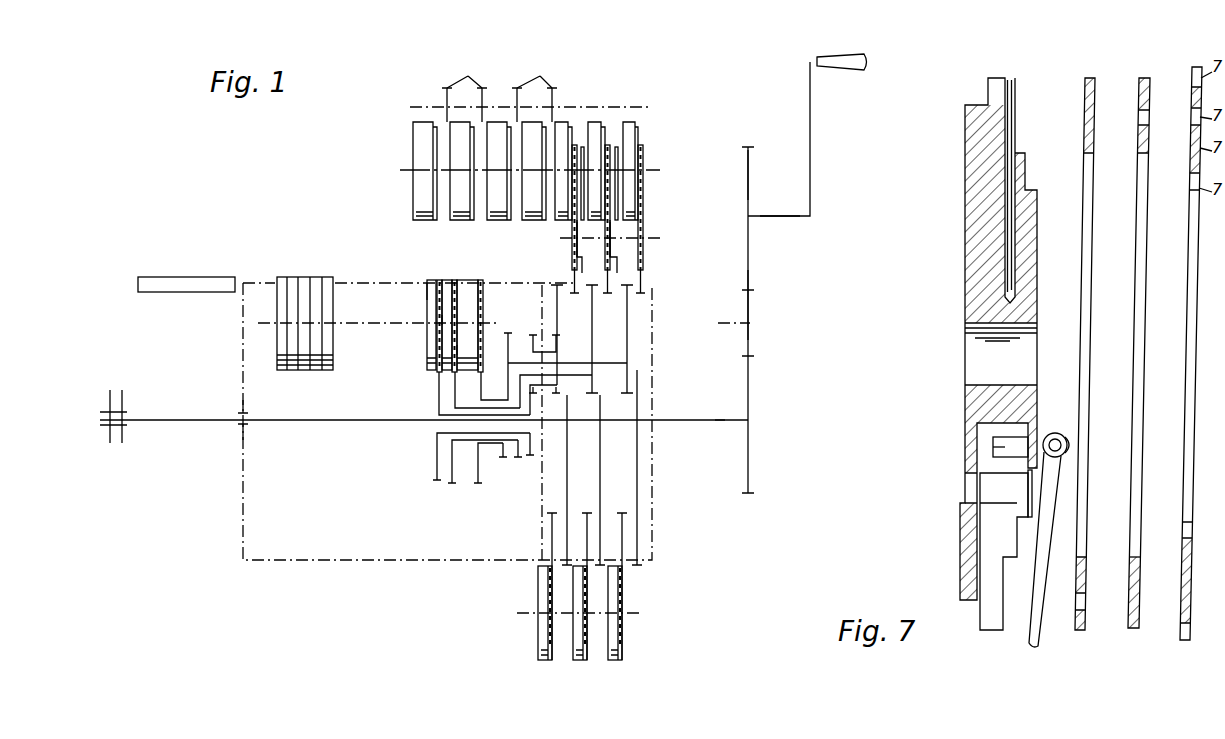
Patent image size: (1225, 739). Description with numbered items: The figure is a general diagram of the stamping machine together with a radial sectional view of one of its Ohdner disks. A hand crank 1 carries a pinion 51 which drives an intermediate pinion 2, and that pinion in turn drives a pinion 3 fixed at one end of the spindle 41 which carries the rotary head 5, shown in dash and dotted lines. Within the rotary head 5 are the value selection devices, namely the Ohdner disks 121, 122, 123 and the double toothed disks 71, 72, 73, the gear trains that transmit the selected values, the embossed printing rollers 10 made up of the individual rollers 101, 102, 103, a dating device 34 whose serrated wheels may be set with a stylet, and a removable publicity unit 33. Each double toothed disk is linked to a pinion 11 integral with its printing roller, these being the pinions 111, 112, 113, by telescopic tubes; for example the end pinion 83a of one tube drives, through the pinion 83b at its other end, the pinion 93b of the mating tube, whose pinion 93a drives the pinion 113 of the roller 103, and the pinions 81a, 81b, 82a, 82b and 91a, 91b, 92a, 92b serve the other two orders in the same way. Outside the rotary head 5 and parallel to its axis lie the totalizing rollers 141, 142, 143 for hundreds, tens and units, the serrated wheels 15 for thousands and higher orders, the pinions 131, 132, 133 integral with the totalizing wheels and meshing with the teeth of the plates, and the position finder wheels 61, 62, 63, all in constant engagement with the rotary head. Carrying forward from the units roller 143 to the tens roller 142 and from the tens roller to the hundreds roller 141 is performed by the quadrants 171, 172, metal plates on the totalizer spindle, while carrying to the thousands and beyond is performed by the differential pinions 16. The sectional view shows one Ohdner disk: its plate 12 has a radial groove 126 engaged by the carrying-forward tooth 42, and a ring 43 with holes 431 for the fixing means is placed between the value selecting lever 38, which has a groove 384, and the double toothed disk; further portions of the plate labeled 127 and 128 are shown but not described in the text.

In FIG. 1, the hand crank 1 is at (811, 160).
In FIG. 1, the pinion 11 is at (775, 218).
In FIG. 1, the pinion of the hand crank 51 is at (750, 180).
In FIG. 1, the intermediate pinion 2 is at (750, 313).
In FIG. 1, the pinion 3 is at (750, 410).
In FIG. 1, the spindle 41 is at (719, 422).
In FIG. 1, the carrying-forward tooth 42 is at (255, 422).
In FIG. 7, the carrying-forward tooth 42 is at (1040, 566).
In FIG. 1, the rotary head 5 is at (277, 562).
In FIG. 1, the publicity unit 33 is at (158, 278).
In FIG. 1, the dating device 34 is at (305, 285).
In FIG. 1, the serrated wheels 15 is at (479, 171).
In FIG. 1, the differential pinions 16 is at (499, 91).
In FIG. 1, the hundreds totalizing roller 141 is at (565, 127).
In FIG. 1, the tens totalizing roller 142 is at (600, 123).
In FIG. 1, the units totalizing roller 143 is at (635, 127).
In FIG. 1, the pinion 131 is at (575, 146).
In FIG. 1, the pinion 132 is at (609, 144).
In FIG. 1, the pinion 133 is at (643, 147).
In FIG. 1, the quadrant 171 is at (573, 228).
In FIG. 1, the quadrant 172 is at (606, 250).
In FIG. 1, the embossed printing rollers 10 is at (449, 280).
In FIG. 1, the embossed printing roller 101 is at (427, 288).
In FIG. 1, the embossed printing roller 102 is at (448, 318).
In FIG. 1, the embossed printing roller 103 is at (465, 348).
In FIG. 1, the pinion 111 is at (440, 314).
In FIG. 1, the pinion 112 is at (480, 280).
In FIG. 1, the pinion 113 is at (484, 314).
In FIG. 1, the double toothed disk 71 is at (557, 303).
In FIG. 1, the double toothed disk 72 is at (592, 320).
In FIG. 1, the double toothed disk 73 is at (627, 336).
In FIG. 1, the end pinion of telescopic tube 81a is at (556, 390).
In FIG. 1, the end pinion of telescopic tube 81b is at (436, 413).
In FIG. 1, the end pinion of telescopic tube 82a is at (624, 376).
In FIG. 1, the end pinion of telescopic tube 82b is at (527, 387).
In FIG. 1, the end pinion of telescopic tube 83a is at (627, 366).
In FIG. 1, the end pinion of telescopic tube 83b is at (506, 372).
In FIG. 1, the end pinion of telescopic tube 91a is at (530, 458).
In FIG. 1, the end pinion of telescopic tube 91b is at (437, 453).
In FIG. 1, the end pinion of telescopic tube 92a is at (518, 460).
In FIG. 1, the end pinion of telescopic tube 92b is at (452, 463).
In FIG. 1, the end pinion of telescopic tube 93a is at (503, 452).
In FIG. 1, the end pinion of telescopic tube 93b is at (478, 466).
In FIG. 1, the Ohdner disk 121 is at (567, 490).
In FIG. 1, the Ohdner disk 122 is at (600, 458).
In FIG. 1, the Ohdner disk 123 is at (637, 452).
In FIG. 1, the position finder wheel 61 is at (549, 667).
In FIG. 1, the position finder wheel 62 is at (584, 667).
In FIG. 1, the position finder wheel 63 is at (619, 667).
In FIG. 7, the plate 12 is at (977, 243).
In FIG. 7, the radial groove 126 is at (990, 522).
In FIG. 7, the stop 127 is at (995, 447).
In FIG. 7, the rod 128 is at (1018, 155).
In FIG. 7, the value selection lever 38 is at (1094, 78).
In FIG. 7, the groove 384 is at (1086, 603).
In FIG. 7, the ring 43 is at (1137, 620).
In FIG. 7, the holes 431 is at (1151, 123).